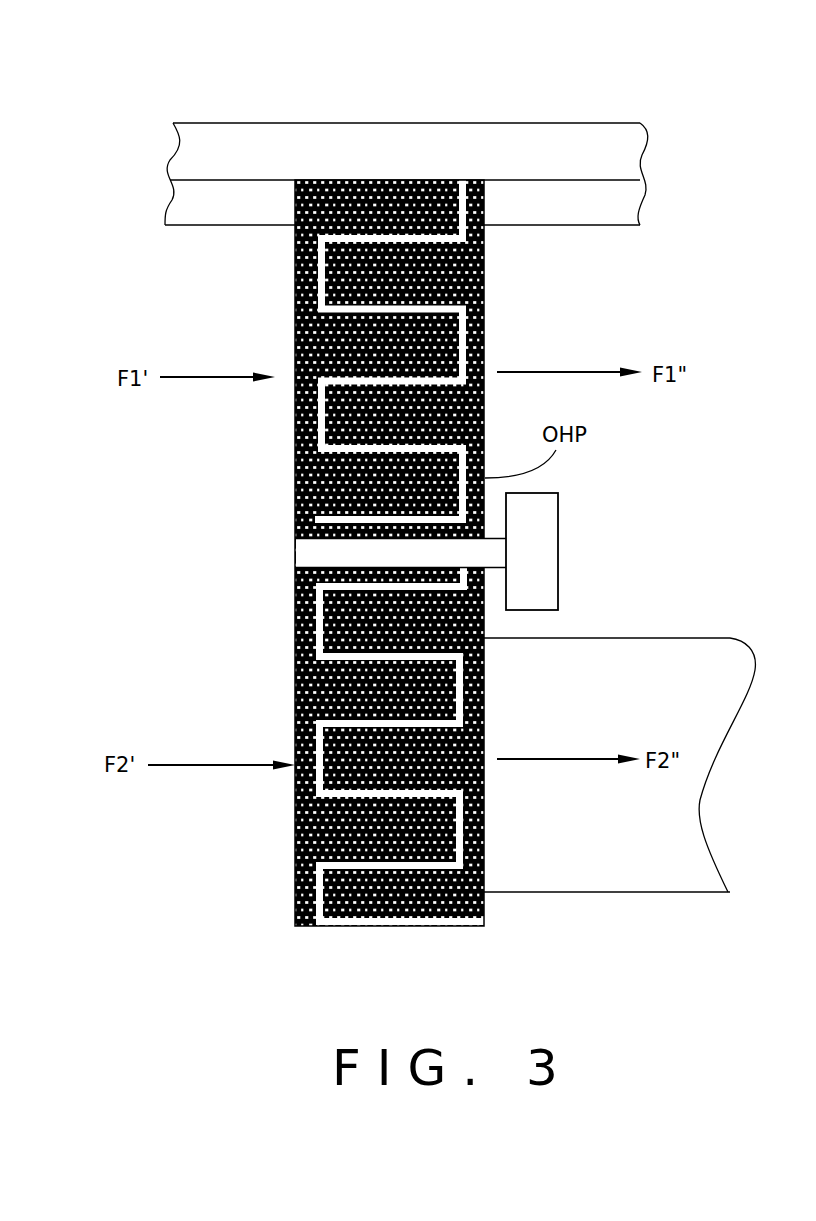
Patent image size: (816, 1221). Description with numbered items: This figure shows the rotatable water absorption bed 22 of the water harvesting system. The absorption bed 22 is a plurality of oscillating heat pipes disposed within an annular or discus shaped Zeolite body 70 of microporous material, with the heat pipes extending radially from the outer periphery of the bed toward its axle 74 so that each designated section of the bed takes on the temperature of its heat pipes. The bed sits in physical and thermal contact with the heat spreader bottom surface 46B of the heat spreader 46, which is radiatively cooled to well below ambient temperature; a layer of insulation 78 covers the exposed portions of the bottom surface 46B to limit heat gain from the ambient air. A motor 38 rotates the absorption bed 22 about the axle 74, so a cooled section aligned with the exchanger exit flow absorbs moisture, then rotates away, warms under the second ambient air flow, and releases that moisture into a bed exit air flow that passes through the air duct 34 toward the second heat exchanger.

The rotatable water absorption bed 22 is at (182, 303).
The air duct 34 is at (642, 893).
The motor 38 is at (545, 555).
The OHP heat spreader 46 is at (520, 150).
The OHP heat spreader bottom surface 46B is at (240, 178).
The Zeolite body 70 is at (483, 330).
The axle 74 is at (295, 553).
The insulation layer 78 is at (275, 207).